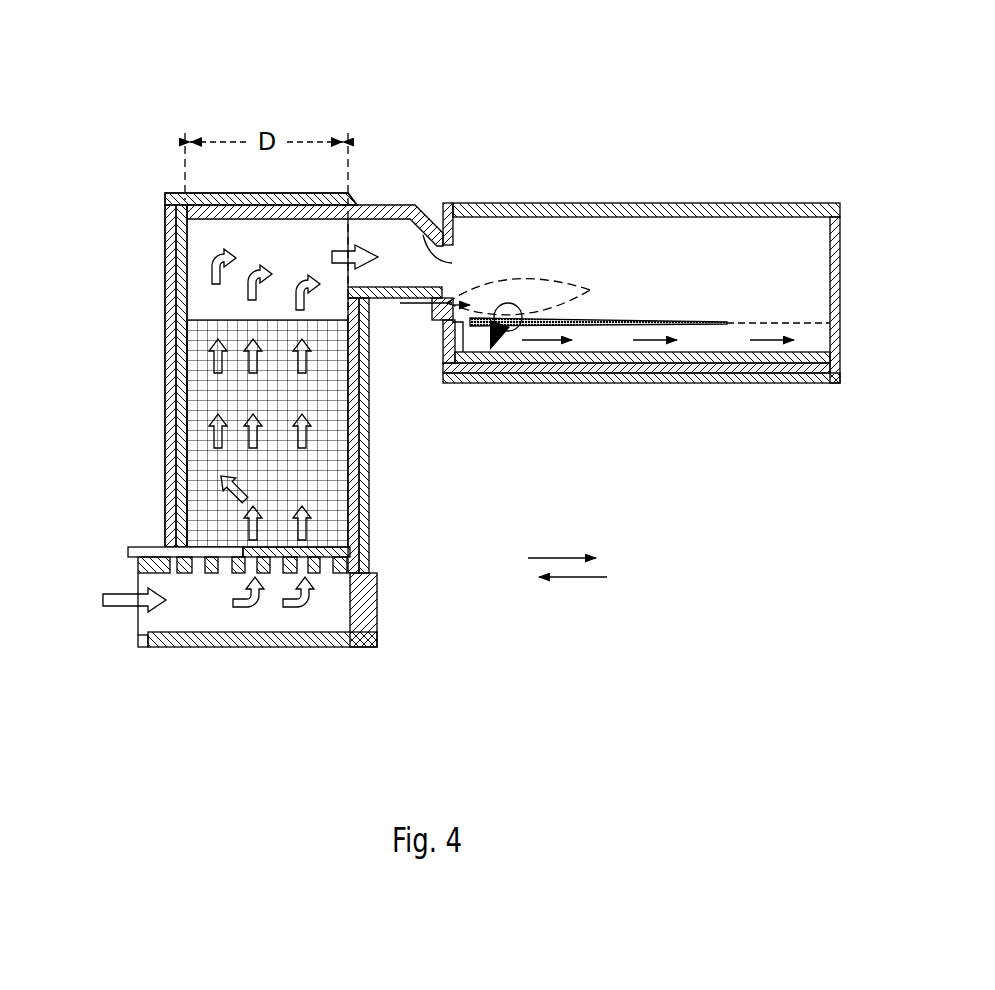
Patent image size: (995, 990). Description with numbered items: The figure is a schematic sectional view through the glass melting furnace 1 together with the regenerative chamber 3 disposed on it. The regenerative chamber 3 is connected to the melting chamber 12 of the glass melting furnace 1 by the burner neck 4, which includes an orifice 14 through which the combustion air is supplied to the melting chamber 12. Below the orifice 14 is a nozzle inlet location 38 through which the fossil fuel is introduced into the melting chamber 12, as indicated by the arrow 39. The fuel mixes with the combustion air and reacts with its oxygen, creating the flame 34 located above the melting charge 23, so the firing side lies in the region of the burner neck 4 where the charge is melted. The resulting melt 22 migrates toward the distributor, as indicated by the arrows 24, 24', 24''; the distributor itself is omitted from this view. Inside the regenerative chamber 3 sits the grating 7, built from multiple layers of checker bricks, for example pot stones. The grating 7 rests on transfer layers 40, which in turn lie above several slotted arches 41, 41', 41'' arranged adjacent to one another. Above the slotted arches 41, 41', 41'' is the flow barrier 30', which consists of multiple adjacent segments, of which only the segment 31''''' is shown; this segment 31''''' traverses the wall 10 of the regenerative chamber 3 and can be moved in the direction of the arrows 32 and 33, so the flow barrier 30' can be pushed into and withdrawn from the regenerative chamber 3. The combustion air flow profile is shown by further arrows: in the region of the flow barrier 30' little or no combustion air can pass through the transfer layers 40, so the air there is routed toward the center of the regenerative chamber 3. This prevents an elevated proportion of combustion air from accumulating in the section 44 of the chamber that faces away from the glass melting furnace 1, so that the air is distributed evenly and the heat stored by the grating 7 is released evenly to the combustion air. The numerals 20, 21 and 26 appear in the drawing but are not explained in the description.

The glass melting furnace 1 is at (797, 185).
The regenerative chamber 3 is at (148, 183).
The burner neck 4 is at (385, 205).
The grating 7 is at (200, 393).
The wall 10 is at (163, 233).
The melting chamber 12 is at (636, 237).
The orifice 14 is at (434, 216).
The injection point 20 is at (506, 302).
The exhaust gas flow direction 21 is at (603, 128).
The melt 22 is at (604, 343).
The melting charge 23 is at (590, 318).
The arrow 24 is at (547, 387).
The arrow 24' is at (658, 387).
The arrow 24'' is at (775, 387).
The air inlet chamber 26 is at (140, 612).
The flow barrier 30' is at (80, 576).
The segment 31''''' is at (168, 523).
The arrow 32 is at (563, 557).
The arrow 33 is at (579, 578).
The flame 34 is at (540, 275).
The nozzle inlet location 38 is at (445, 316).
The arrow 39 is at (410, 304).
The transfer layers 40 is at (355, 553).
The slotted arch 41 is at (197, 621).
The slotted arch 41' is at (236, 634).
The slotted arch 41'' is at (293, 621).
The section 44 is at (190, 470).